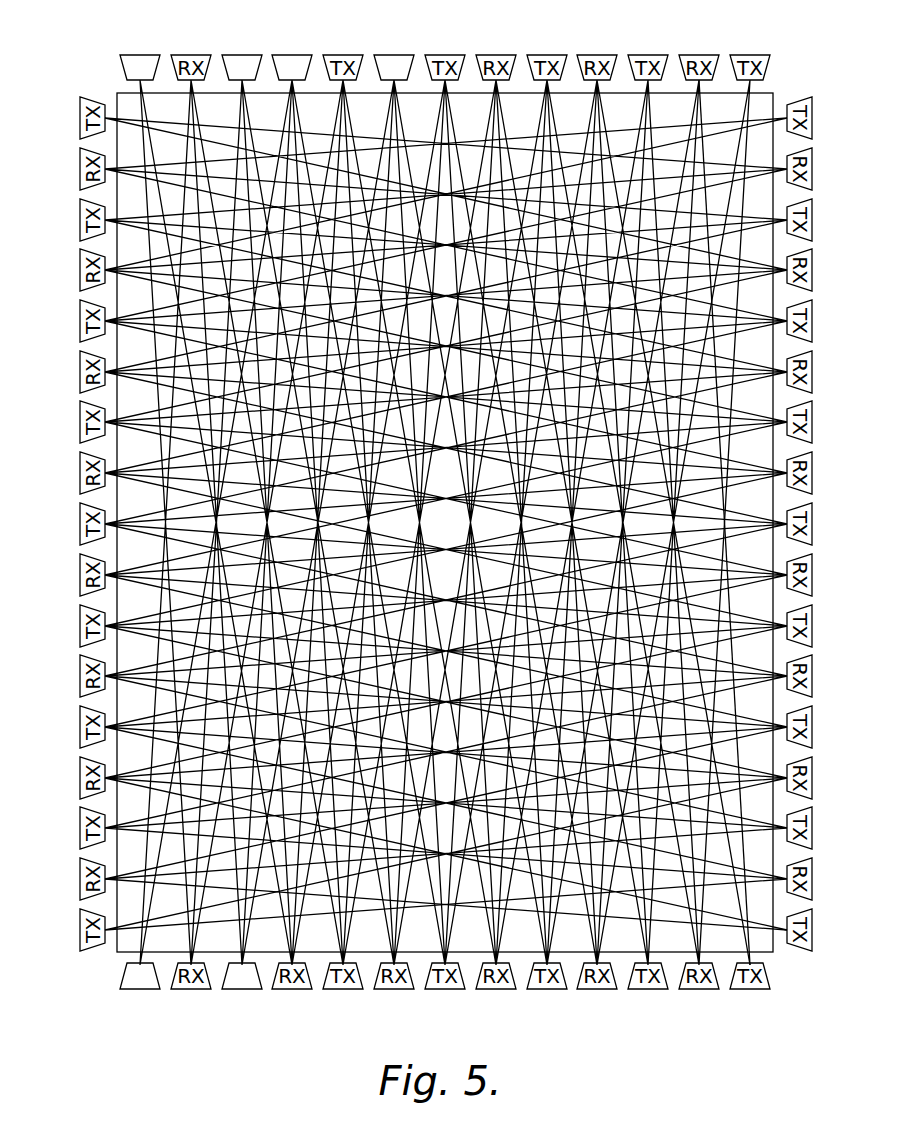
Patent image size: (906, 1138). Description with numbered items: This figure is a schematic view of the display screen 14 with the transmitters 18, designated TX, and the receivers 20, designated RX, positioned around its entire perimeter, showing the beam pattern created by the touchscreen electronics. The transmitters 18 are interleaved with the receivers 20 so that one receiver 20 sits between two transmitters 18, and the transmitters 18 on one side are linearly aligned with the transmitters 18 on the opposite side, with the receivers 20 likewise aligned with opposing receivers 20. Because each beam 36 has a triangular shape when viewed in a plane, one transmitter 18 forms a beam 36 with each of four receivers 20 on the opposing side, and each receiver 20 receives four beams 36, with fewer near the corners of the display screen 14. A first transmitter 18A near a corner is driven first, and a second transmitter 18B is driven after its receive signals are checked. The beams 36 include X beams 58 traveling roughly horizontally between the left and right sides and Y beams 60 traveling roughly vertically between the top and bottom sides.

The display screen 14 is at (760, 101).
The beam 36 is at (122, 97).
The transmitter 18 is at (242, 53).
The receiver 20 is at (397, 53).
The first transmitter 18A is at (128, 982).
The second transmitter 18B is at (232, 982).
The X beam 58 is at (765, 928).
The Y beam 60 is at (750, 940).